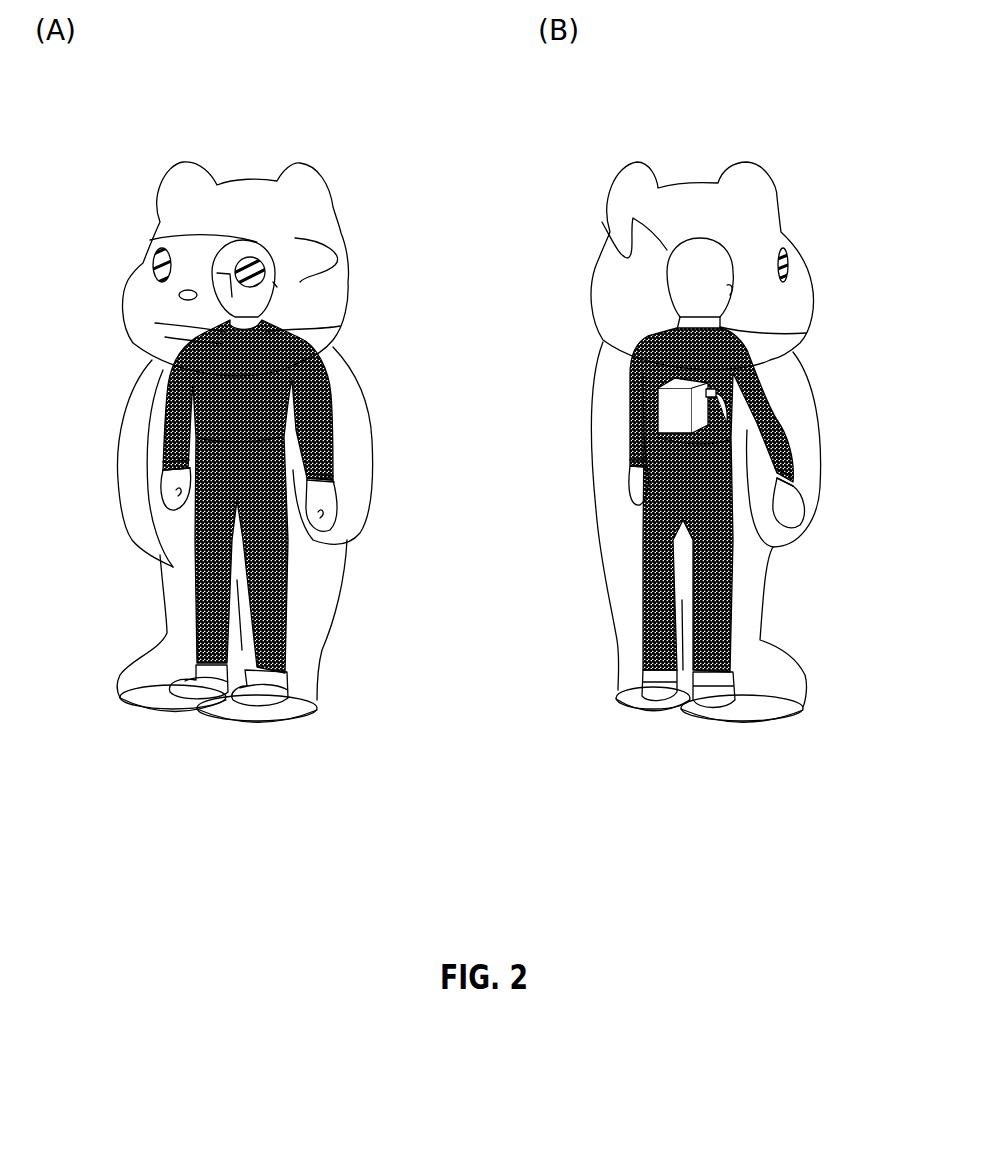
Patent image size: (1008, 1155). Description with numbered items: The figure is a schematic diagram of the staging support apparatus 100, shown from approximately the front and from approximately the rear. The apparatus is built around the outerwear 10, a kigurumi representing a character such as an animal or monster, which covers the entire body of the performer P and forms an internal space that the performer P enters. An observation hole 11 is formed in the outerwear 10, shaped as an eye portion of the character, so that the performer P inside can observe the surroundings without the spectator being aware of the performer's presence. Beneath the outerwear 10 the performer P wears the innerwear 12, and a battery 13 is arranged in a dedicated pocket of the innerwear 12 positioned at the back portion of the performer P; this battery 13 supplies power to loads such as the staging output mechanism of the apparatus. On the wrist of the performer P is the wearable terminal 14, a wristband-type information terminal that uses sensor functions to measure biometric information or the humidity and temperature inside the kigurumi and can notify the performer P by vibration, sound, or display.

The staging support apparatus 100 is at (252, 120).
The outerwear 10 is at (308, 180).
The observation hole 11 is at (157, 255).
The performer P is at (273, 284).
The innerwear 12 is at (340, 327).
The battery 13 is at (675, 417).
The wearable terminal 14 is at (163, 465).